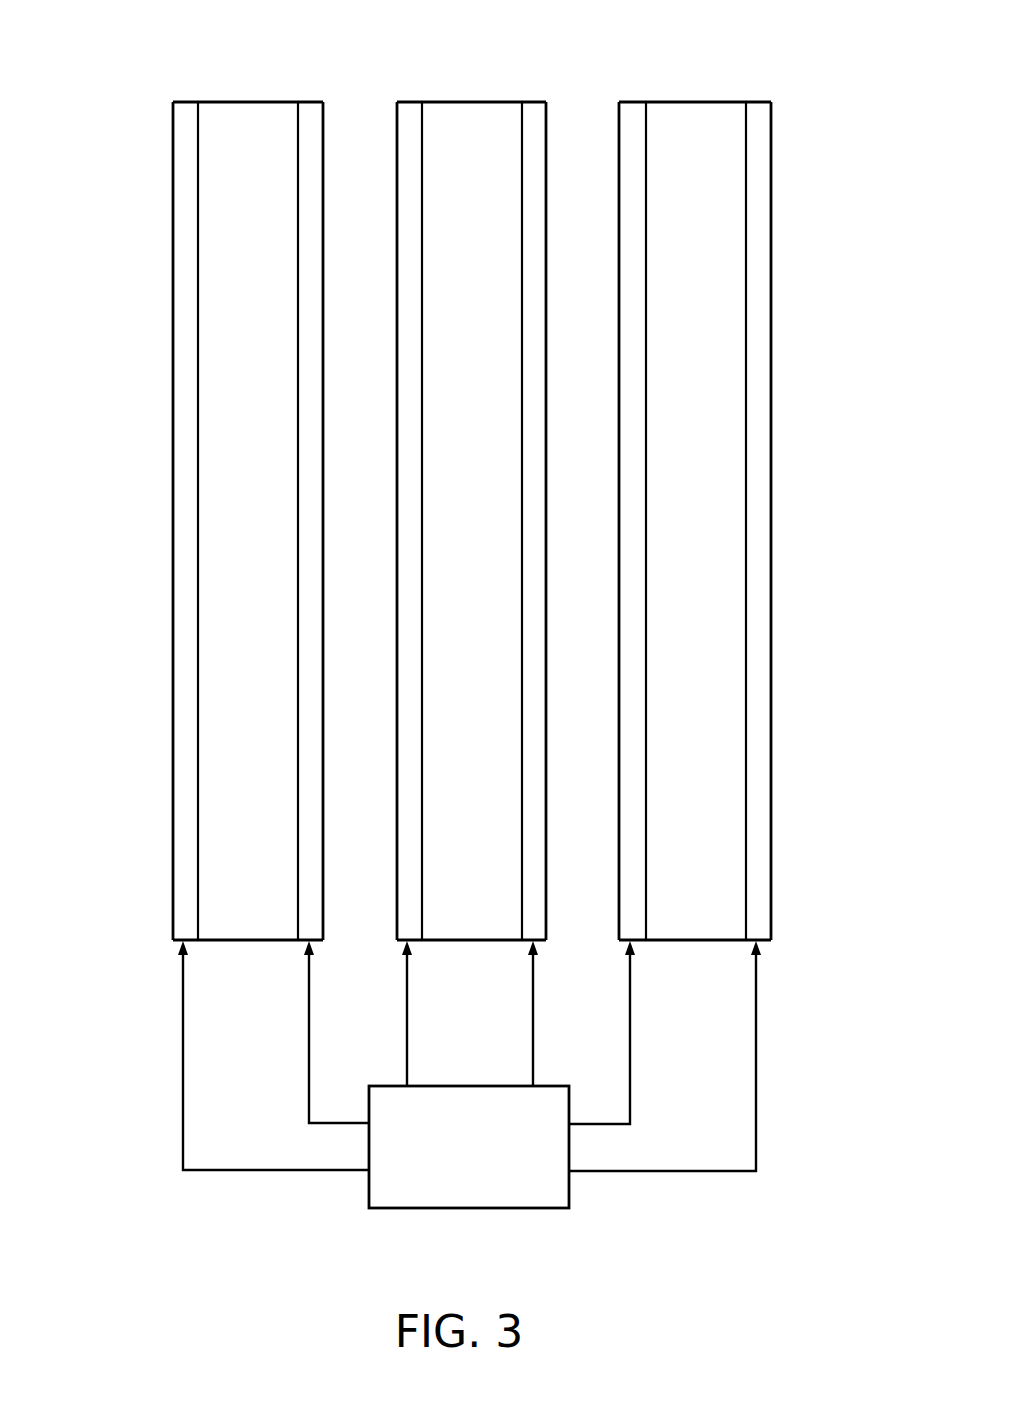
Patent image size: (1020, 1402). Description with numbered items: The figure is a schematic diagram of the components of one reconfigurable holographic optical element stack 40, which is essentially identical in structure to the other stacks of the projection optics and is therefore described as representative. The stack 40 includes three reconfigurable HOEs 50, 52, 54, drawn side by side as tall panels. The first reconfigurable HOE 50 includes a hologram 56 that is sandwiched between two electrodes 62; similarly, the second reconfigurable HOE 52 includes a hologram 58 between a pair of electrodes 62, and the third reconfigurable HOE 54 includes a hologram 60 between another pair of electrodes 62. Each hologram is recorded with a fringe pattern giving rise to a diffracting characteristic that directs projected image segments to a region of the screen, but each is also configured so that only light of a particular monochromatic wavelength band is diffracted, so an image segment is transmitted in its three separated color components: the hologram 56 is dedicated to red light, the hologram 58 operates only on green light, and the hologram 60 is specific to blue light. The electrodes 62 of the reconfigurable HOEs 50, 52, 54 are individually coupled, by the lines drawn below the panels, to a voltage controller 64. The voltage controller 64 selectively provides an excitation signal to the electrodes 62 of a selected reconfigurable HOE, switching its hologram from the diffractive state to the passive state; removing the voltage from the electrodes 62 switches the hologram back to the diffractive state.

The reconfigurable HOE stack 40 is at (88, 205).
The reconfigurable HOE 50 is at (173, 90).
The reconfigurable HOE 52 is at (397, 90).
The reconfigurable HOE 54 is at (619, 90).
The hologram 56 is at (218, 665).
The hologram 58 is at (485, 643).
The hologram 60 is at (720, 611).
The electrodes 62 is at (311, 308).
The voltage controller 64 is at (521, 1209).